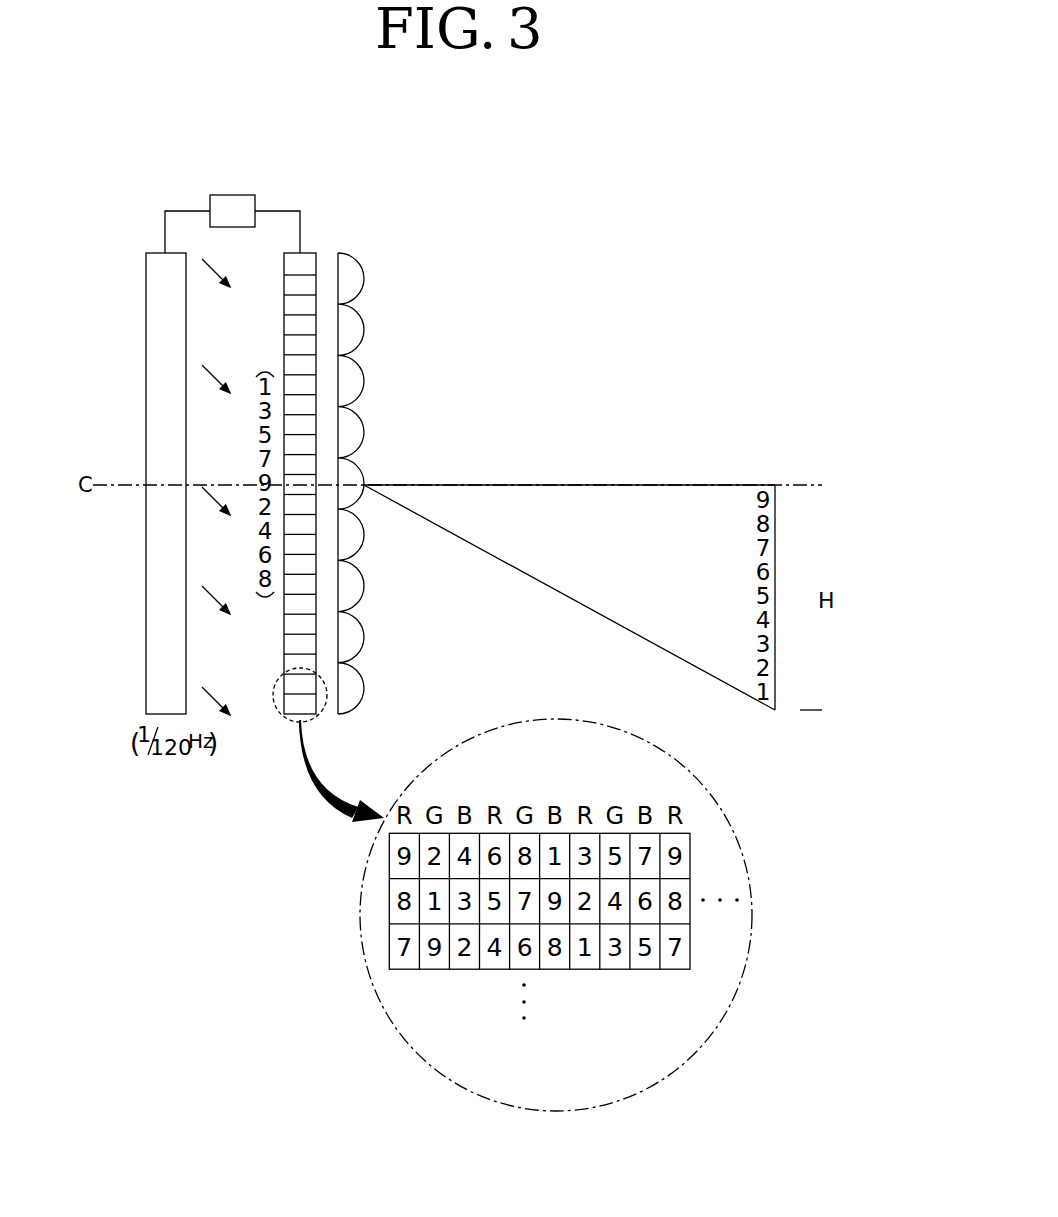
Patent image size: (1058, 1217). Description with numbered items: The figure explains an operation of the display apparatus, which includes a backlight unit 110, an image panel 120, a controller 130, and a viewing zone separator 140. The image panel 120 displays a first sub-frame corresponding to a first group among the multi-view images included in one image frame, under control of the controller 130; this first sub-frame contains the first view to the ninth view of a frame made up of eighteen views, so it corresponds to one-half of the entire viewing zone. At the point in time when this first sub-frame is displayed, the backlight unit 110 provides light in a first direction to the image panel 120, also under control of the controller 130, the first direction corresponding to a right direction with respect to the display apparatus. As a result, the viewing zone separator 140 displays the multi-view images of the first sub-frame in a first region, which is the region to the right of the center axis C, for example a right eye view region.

The backlight unit 110 is at (146, 692).
The image panel 120 is at (313, 719).
The controller 130 is at (233, 195).
The viewing zone separator 140 is at (364, 702).